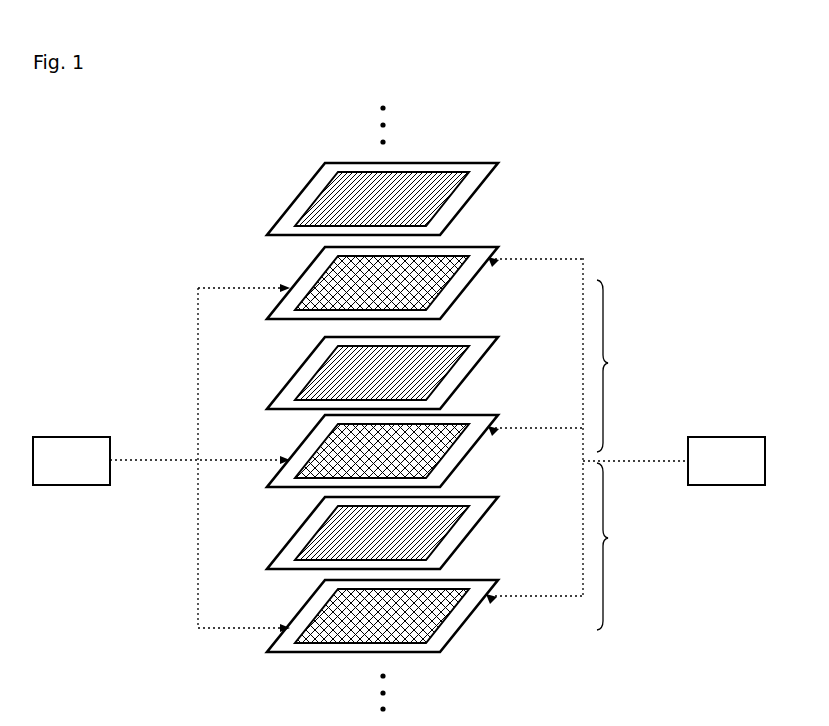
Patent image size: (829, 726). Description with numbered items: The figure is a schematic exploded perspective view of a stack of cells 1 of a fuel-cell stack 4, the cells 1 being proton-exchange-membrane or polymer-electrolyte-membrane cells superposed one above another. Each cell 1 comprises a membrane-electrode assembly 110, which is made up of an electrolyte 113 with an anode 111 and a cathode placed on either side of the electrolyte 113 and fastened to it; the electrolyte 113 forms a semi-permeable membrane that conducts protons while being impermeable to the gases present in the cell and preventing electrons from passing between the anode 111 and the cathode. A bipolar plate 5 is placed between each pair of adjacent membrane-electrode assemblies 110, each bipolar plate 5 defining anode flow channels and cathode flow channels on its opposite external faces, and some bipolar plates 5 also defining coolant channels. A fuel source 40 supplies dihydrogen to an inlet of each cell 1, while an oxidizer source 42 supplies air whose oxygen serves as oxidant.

The cell 1 is at (618, 455).
The fuel-cell stack 4 is at (626, 170).
The bipolar plate 5 is at (481, 283).
The fuel source 40 is at (85, 473).
The oxidizer source 42 is at (740, 473).
The membrane-electrode assembly 110 is at (396, 358).
The anode 111 is at (333, 181).
The electrolyte 113 is at (303, 190).